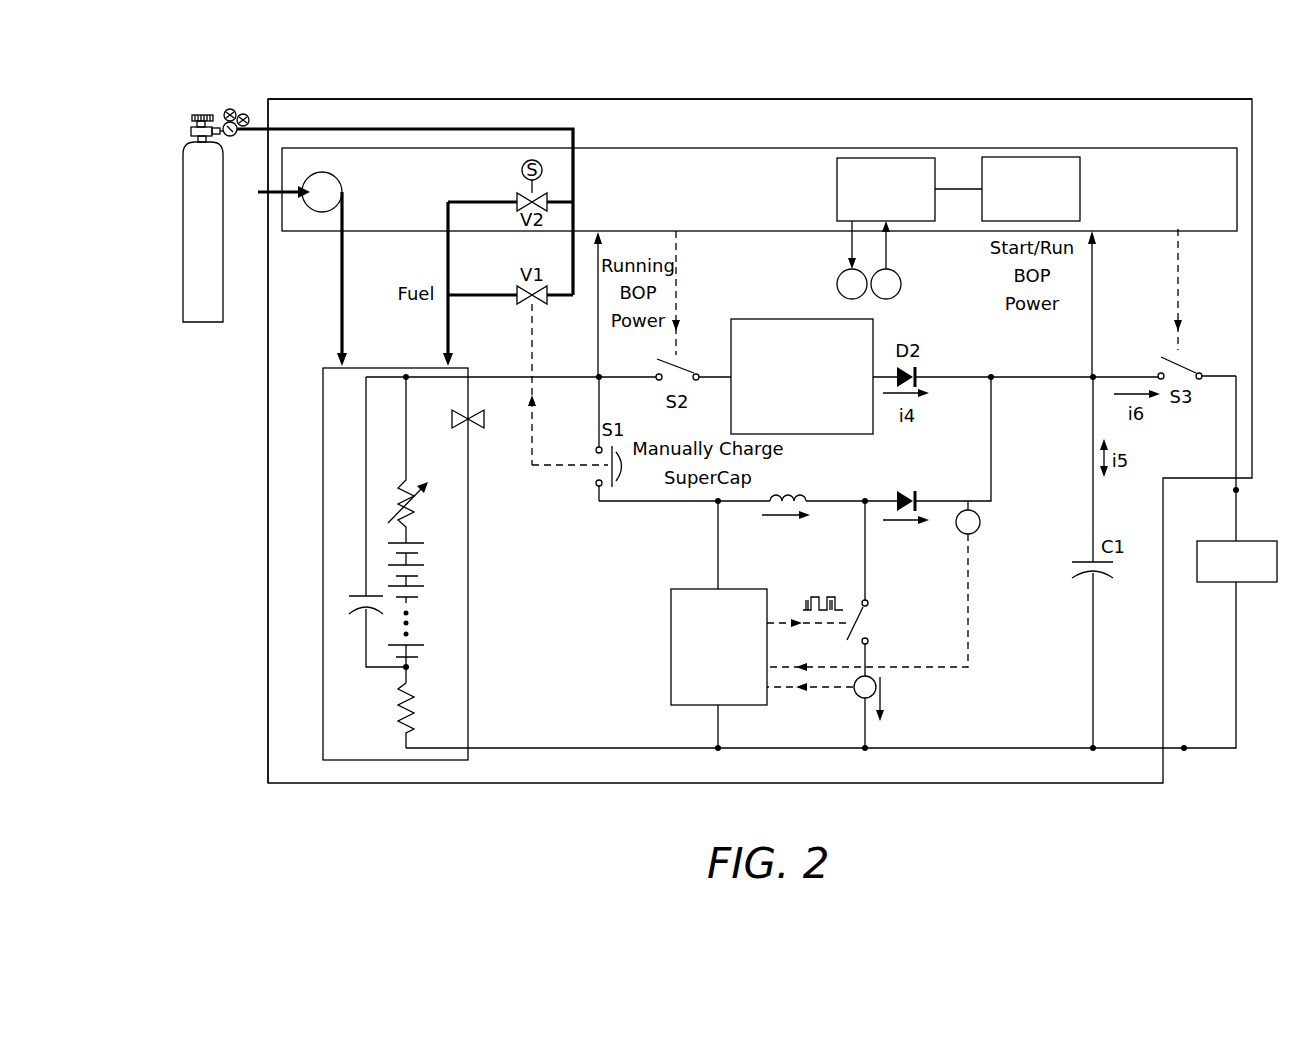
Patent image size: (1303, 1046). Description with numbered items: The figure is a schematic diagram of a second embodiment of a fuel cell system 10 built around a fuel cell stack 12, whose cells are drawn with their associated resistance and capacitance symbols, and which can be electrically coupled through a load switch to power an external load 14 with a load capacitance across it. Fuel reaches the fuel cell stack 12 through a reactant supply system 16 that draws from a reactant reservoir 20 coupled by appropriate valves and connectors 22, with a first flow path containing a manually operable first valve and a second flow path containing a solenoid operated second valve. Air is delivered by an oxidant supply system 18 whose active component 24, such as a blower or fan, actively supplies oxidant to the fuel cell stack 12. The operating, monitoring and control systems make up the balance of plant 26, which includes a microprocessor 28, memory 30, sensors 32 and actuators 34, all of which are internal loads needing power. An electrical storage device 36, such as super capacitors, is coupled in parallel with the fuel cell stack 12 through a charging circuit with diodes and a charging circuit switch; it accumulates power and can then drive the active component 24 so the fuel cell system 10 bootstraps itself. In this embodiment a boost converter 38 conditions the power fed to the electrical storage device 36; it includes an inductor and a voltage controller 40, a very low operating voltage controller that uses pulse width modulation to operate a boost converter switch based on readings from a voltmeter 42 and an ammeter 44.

The fuel cell system 10 is at (268, 513).
The fuel cell stack 12 is at (323, 707).
The external load 14 is at (1270, 541).
The reactant supply system 16 is at (604, 124).
The oxidant supply system 18 is at (286, 318).
The reactant reservoir 20 is at (193, 322).
The valves and connectors 22 is at (247, 86).
The active component 24 is at (340, 181).
The balance of plant 26 is at (743, 148).
The microprocessor 28 is at (837, 190).
The memory 30 is at (1080, 189).
The sensors 32 is at (901, 284).
The actuators 34 is at (837, 284).
The electrical storage device 36 is at (803, 434).
The boost converter 38 is at (628, 636).
The voltage controller 40 is at (671, 678).
The voltmeter 42 is at (980, 523).
The ammeter 44 is at (856, 696).